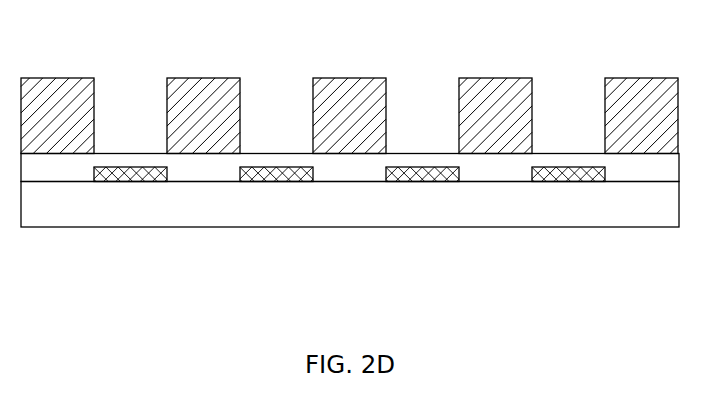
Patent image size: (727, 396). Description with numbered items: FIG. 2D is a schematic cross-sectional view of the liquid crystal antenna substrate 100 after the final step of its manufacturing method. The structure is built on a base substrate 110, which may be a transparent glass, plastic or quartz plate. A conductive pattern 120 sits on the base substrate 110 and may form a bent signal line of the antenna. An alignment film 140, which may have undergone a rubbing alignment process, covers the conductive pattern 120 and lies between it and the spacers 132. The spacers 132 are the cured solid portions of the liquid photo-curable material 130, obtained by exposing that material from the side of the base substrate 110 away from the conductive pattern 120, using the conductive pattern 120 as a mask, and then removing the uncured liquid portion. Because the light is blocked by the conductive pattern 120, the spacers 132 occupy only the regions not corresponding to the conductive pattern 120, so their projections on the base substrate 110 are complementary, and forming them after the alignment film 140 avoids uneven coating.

The liquid crystal antenna substrate 100 is at (350, 157).
The base substrate 110 is at (542, 210).
The conductive pattern 120 is at (280, 173).
The liquid photo-curable material 130 is at (349, 84).
The spacers 132 is at (350, 108).
The alignment film 140 is at (55, 167).